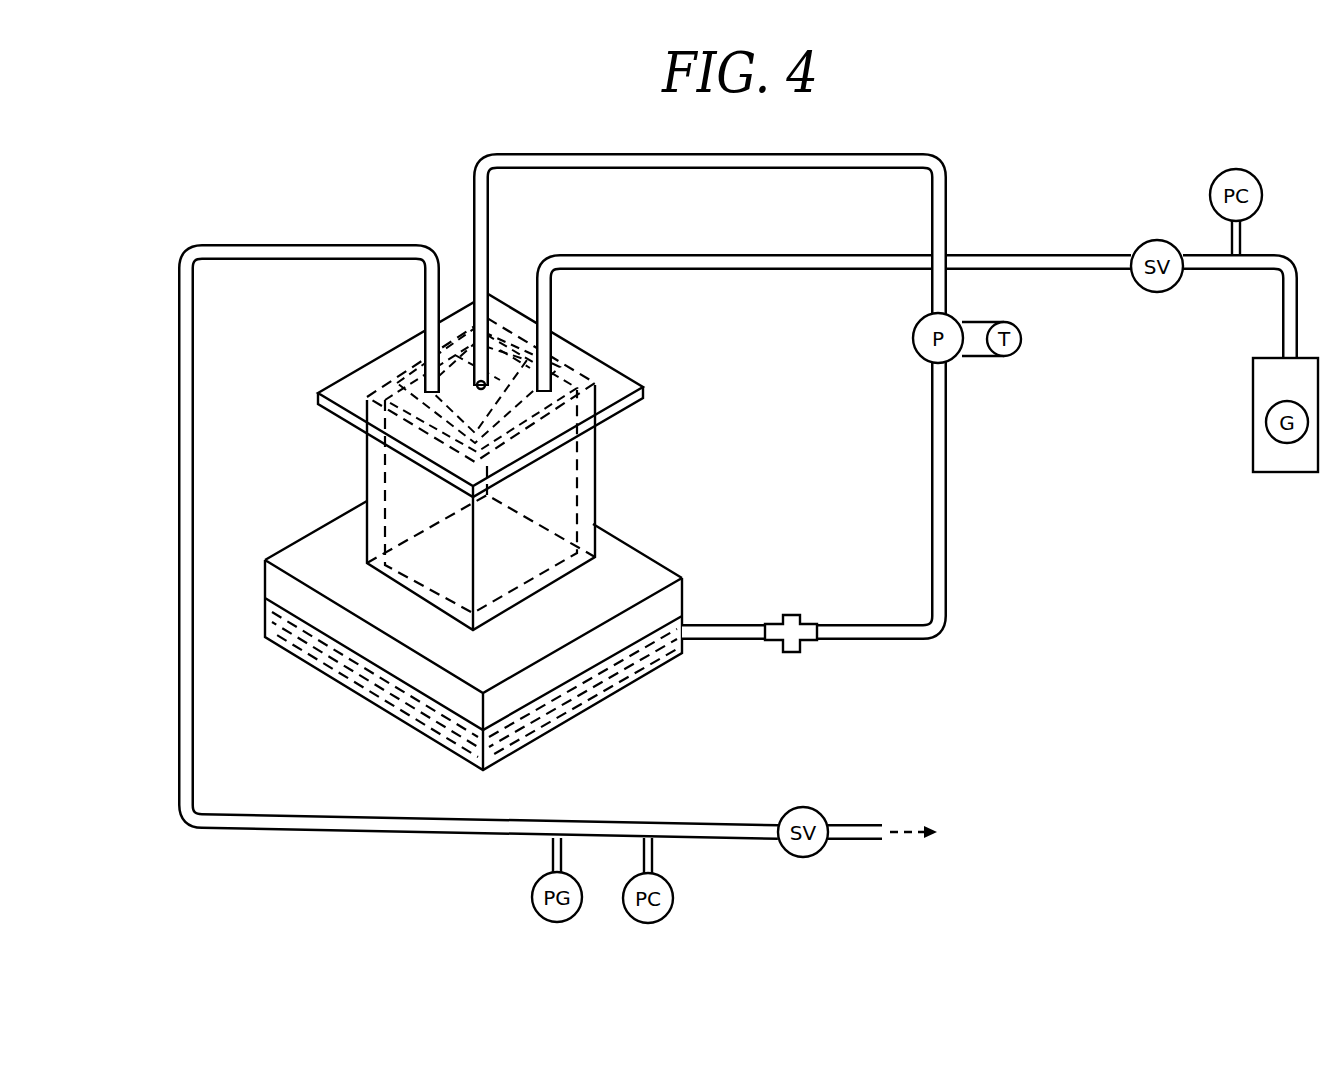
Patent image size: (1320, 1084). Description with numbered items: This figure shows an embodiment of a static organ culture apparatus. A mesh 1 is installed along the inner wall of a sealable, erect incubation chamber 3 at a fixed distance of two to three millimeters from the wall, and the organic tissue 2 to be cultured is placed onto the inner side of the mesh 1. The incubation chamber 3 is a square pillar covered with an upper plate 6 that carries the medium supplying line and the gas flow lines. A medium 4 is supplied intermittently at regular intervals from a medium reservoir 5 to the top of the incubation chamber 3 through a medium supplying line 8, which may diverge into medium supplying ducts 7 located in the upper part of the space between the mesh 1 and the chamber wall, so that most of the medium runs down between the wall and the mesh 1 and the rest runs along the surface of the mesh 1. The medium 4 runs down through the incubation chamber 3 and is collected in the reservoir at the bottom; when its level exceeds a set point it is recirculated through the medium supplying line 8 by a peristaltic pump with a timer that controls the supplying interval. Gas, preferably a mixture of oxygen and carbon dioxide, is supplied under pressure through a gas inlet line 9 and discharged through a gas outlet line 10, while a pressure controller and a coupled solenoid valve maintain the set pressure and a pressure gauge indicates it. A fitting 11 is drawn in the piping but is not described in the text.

The mesh 1 is at (575, 462).
The organic tissue 2 is at (545, 405).
The incubation chamber 3 is at (470, 452).
The medium 4 is at (600, 688).
The medium reservoir 5 is at (340, 627).
The upper plate 6 is at (397, 350).
The medium supplying duct 7 is at (528, 355).
The medium supplying line 8 is at (771, 162).
The gas inlet line 9 is at (855, 262).
The gas outlet line 10 is at (373, 830).
The valve 11 is at (793, 655).